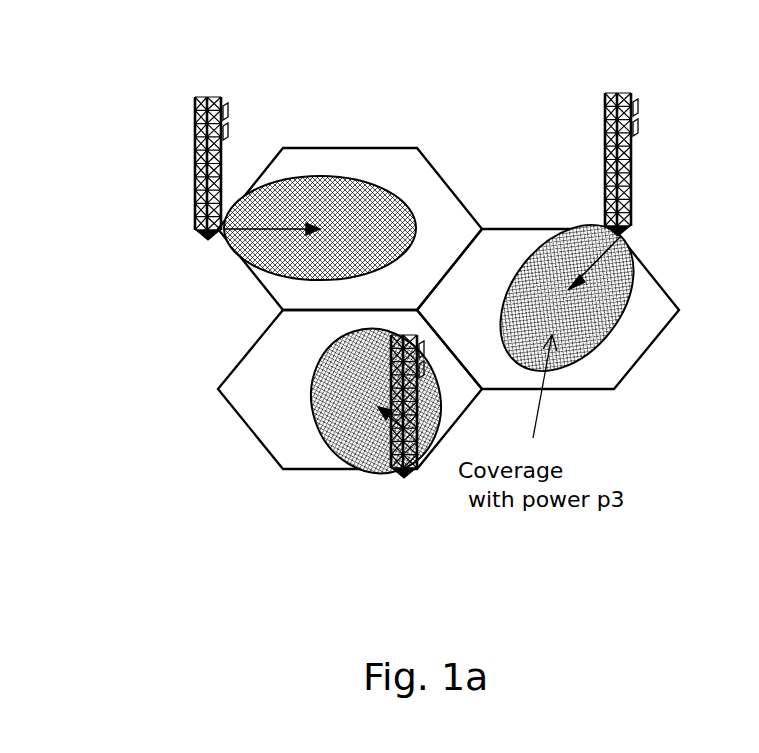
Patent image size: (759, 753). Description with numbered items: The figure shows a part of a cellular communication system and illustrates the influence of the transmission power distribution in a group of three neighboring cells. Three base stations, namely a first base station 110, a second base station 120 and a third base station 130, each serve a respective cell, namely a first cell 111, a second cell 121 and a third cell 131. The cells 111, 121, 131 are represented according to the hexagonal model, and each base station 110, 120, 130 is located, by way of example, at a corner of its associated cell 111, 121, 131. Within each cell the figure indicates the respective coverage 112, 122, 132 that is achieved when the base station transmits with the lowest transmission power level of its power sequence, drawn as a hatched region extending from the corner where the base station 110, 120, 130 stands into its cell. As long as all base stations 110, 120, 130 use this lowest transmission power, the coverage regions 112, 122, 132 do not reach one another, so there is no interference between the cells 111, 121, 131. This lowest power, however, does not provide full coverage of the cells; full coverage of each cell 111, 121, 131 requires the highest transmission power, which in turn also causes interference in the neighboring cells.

The base station BS0 110 is at (232, 128).
The cell 0 111 is at (443, 180).
The coverage 112 is at (384, 185).
The base station BS1 120 is at (637, 140).
The cell 1 121 is at (672, 297).
The coverage 122 is at (637, 273).
The base station BS2 130 is at (385, 460).
The cell 2 131 is at (230, 378).
The coverage 132 is at (308, 367).